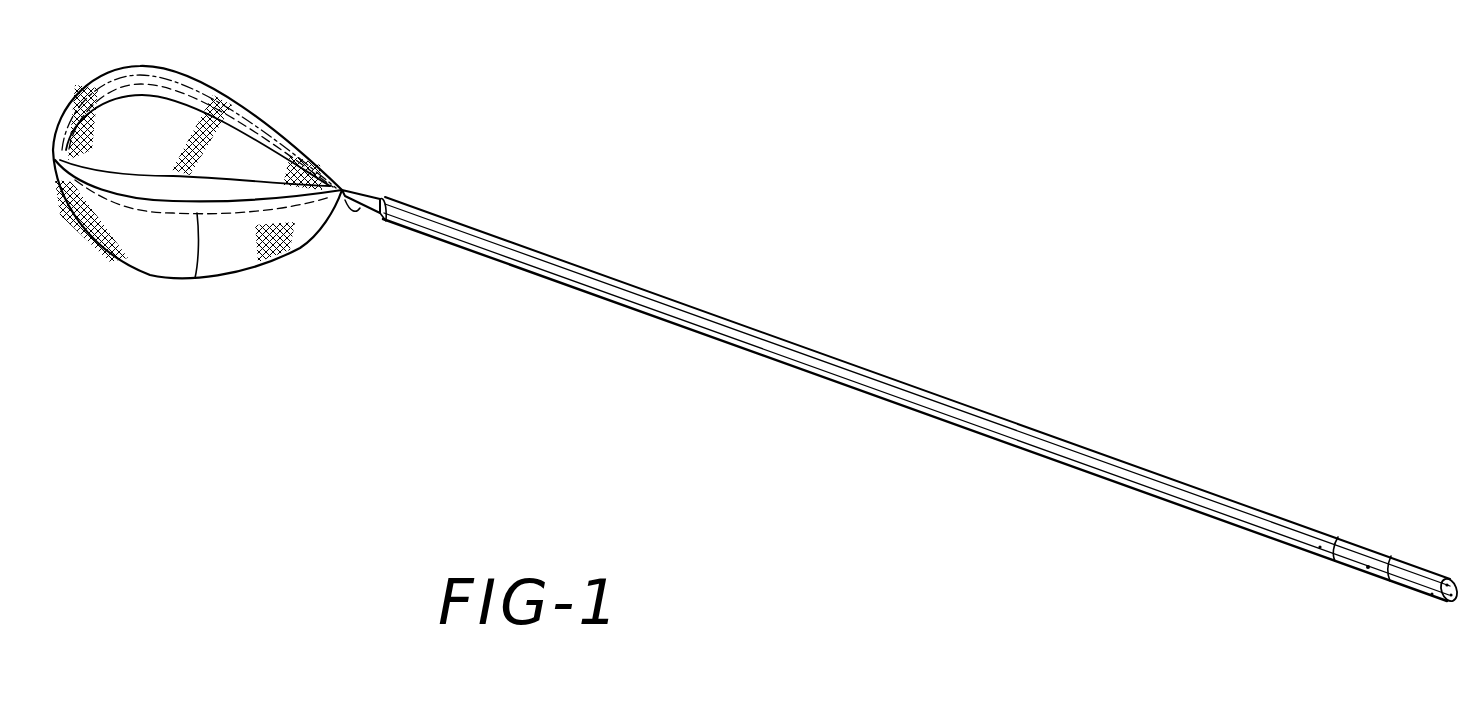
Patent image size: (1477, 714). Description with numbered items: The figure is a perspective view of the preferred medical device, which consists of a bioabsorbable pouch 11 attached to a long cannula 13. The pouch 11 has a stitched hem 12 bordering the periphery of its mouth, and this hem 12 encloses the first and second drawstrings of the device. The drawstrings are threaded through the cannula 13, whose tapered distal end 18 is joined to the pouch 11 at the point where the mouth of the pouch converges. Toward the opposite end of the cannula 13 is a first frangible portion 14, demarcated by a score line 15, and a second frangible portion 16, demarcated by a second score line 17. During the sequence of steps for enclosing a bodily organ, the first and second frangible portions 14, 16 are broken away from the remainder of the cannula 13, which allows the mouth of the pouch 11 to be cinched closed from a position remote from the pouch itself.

The bioabsorbable pouch 11 is at (150, 275).
The stitched hem 12 is at (195, 278).
The cannula 13 is at (845, 362).
The first frangible portion 14 is at (1430, 566).
The score line 15 is at (1392, 587).
The second frangible portion 16 is at (1362, 547).
The second score line 17 is at (1320, 548).
The tapered distal end 18 is at (353, 208).